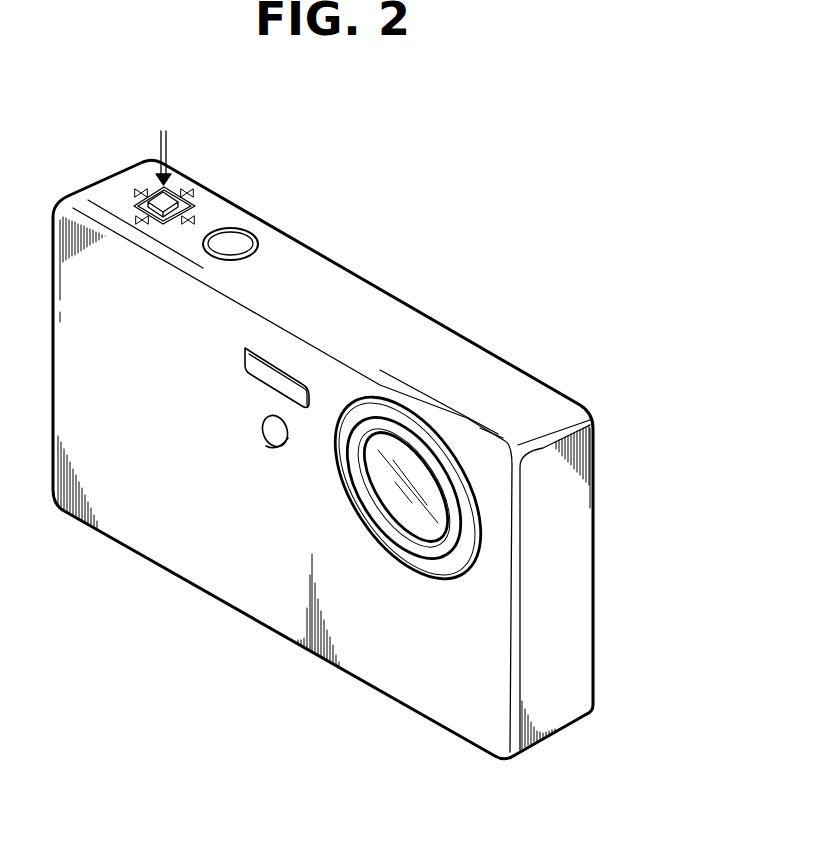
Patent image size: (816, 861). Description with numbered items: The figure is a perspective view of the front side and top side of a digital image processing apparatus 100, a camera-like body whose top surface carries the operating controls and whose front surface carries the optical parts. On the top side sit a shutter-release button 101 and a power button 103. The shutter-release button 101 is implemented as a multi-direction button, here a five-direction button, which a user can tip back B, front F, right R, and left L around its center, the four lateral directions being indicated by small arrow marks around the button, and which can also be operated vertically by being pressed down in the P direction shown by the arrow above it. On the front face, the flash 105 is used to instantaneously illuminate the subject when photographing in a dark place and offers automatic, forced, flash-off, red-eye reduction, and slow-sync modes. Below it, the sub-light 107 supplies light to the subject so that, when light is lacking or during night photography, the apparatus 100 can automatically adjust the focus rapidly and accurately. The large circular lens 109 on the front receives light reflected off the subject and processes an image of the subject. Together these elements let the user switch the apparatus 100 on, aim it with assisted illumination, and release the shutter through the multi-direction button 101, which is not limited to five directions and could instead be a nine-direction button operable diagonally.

The digital image processing apparatus 100 is at (556, 323).
The shutter-release button 101 is at (172, 195).
The power button 103 is at (240, 241).
The flash 105 is at (278, 373).
The sub-light 107 is at (284, 434).
The lens 109 is at (463, 532).
The P direction P is at (163, 145).
The right direction R is at (137, 190).
The back direction B is at (187, 193).
The front direction F is at (138, 221).
The left direction L is at (193, 220).